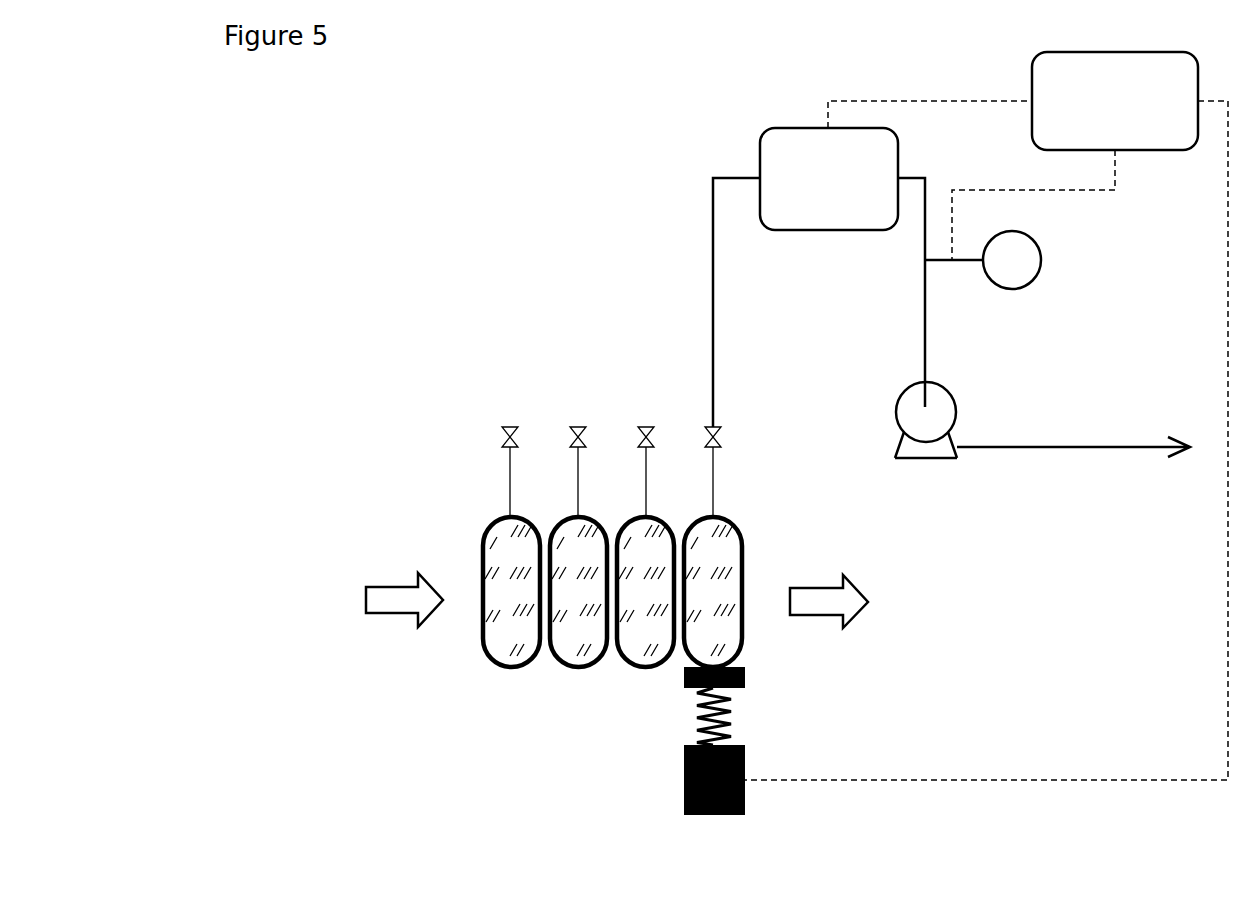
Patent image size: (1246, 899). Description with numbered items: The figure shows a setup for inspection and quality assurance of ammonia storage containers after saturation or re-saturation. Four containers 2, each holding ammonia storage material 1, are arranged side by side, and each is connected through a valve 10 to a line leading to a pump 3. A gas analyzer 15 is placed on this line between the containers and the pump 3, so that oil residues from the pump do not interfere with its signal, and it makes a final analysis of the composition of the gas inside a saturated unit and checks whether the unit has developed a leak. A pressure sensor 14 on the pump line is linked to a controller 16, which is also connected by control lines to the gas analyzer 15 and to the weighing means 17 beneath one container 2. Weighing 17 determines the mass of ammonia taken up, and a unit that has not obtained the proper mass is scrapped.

The ammonia storage material 1 is at (640, 592).
The container 2 is at (752, 624).
The valve 10 is at (716, 312).
The pump 3 is at (920, 414).
The pressure sensor 14 is at (1009, 268).
The gas analyzer 15 is at (829, 179).
The controller 16 is at (1115, 101).
The weighing 17 is at (730, 741).